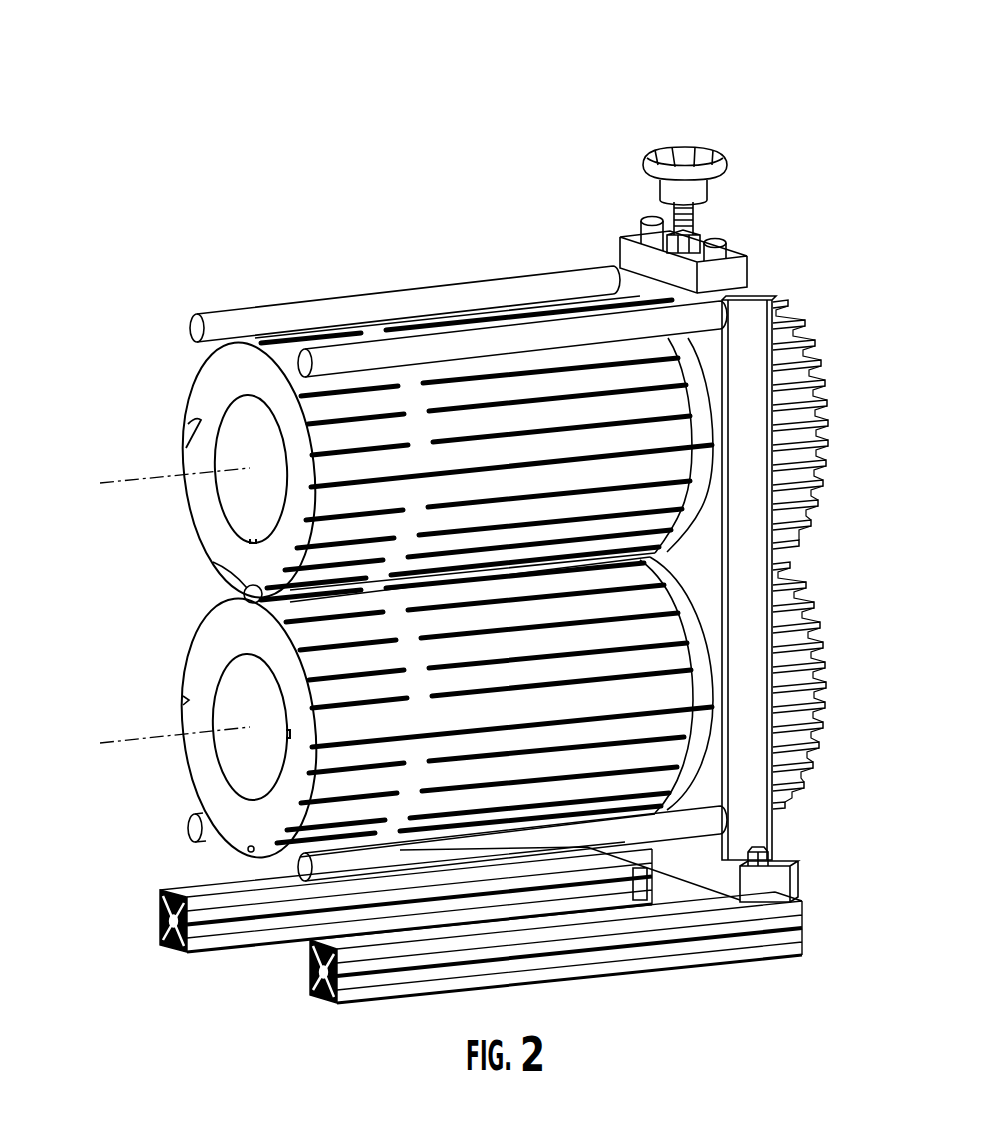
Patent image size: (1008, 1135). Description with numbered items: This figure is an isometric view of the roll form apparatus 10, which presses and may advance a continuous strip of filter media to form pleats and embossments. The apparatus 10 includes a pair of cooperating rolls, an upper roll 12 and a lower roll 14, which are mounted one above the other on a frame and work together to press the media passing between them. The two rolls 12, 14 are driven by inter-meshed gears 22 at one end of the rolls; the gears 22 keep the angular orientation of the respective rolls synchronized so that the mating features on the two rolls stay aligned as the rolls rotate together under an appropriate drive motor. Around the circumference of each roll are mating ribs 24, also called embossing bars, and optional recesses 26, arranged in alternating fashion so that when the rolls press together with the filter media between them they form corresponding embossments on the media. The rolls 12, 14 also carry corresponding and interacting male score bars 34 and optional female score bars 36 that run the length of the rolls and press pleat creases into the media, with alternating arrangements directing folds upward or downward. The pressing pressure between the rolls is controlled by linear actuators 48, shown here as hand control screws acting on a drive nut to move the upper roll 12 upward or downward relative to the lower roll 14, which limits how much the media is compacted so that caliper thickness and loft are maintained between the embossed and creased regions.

The roll form apparatus 10 is at (410, 112).
The upper roll 12 is at (205, 373).
The lower roll 14 is at (205, 632).
The inter-meshed gears 22 is at (805, 340).
The ribs 24 is at (373, 382).
The recesses 26 is at (337, 417).
The male score bars 34 is at (493, 470).
The female score bars 36 is at (201, 420).
The linear actuators 48 is at (690, 150).